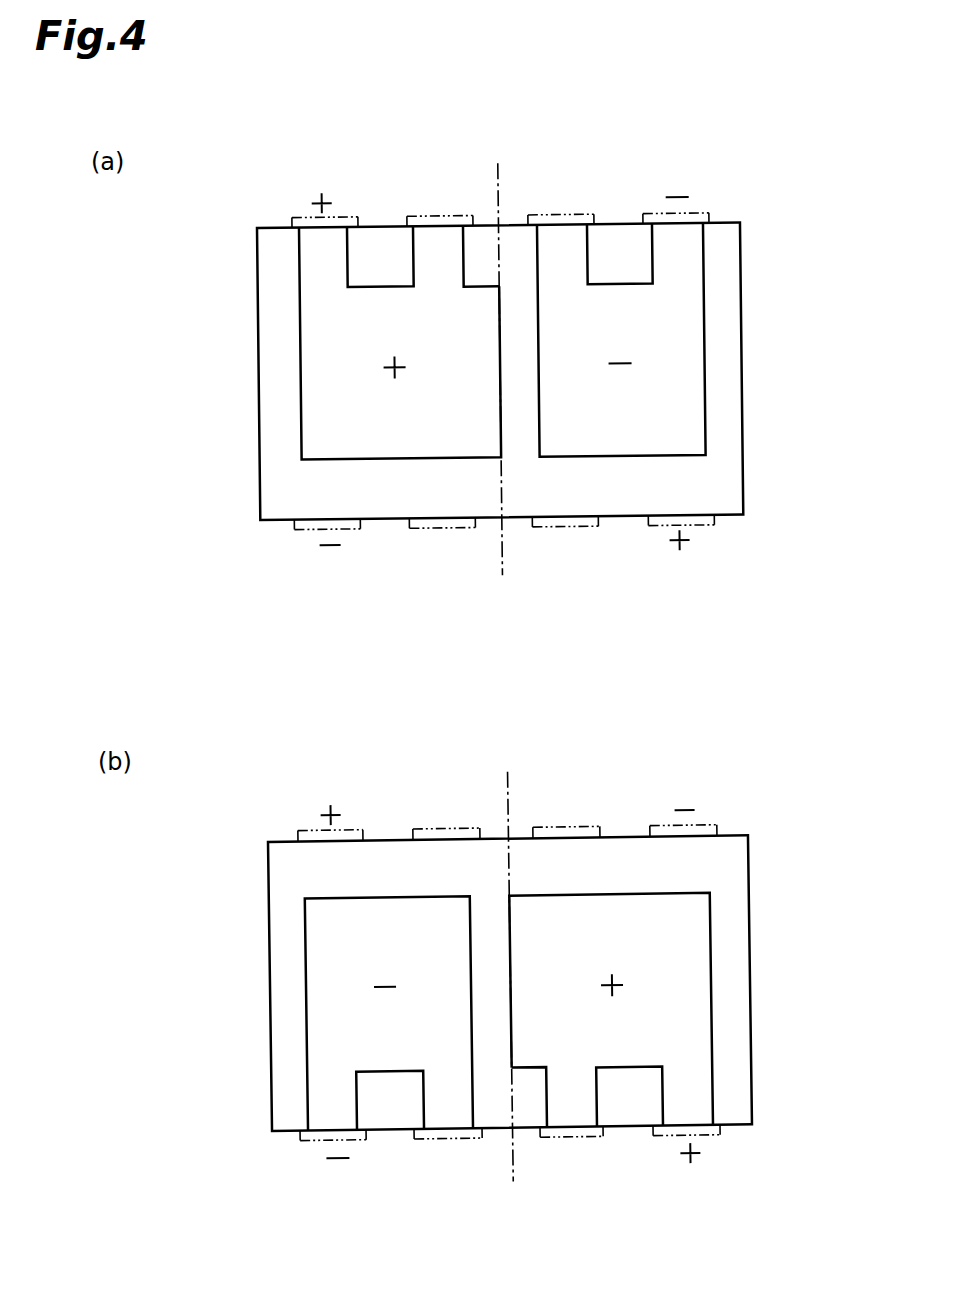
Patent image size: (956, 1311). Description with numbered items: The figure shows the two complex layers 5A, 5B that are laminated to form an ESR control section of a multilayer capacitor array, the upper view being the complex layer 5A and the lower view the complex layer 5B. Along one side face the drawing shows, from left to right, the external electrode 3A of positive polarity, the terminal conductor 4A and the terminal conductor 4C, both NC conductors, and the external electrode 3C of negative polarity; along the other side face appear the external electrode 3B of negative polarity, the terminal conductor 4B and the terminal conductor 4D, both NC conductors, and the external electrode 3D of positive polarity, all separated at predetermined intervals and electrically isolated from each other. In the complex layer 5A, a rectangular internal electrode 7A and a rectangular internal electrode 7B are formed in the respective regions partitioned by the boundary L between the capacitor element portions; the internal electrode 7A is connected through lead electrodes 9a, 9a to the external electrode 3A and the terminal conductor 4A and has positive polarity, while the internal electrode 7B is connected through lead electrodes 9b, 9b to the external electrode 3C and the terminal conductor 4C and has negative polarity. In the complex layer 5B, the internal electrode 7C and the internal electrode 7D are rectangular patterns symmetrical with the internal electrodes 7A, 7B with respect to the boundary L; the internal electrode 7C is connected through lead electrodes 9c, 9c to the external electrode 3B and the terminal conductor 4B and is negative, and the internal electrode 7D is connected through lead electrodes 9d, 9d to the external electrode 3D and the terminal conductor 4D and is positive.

The external electrode 3A is at (303, 213).
The external electrode 3B is at (304, 529).
The external electrode 3C is at (700, 217).
The external electrode 3D is at (694, 532).
The terminal conductor 4A is at (415, 214).
The terminal conductor 4B is at (418, 530).
The terminal conductor 4C is at (588, 216).
The terminal conductor 4D is at (583, 531).
The complex layer 5A is at (802, 200).
The complex layer 5B is at (809, 814).
The internal electrode 7A is at (313, 364).
The internal electrode 7B is at (682, 363).
The internal electrode 7C is at (321, 995).
The internal electrode 7D is at (691, 995).
The lead electrode 9a is at (303, 259).
The lead electrode 9b is at (577, 260).
The lead electrode 9c is at (313, 1099).
The lead electrode 9d is at (588, 1100).
The boundary L is at (499, 548).